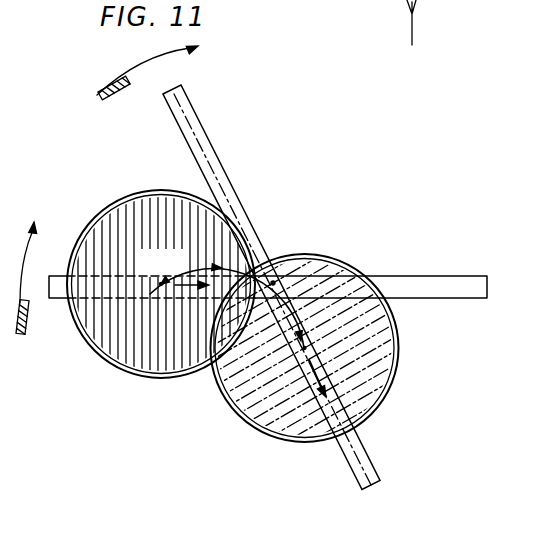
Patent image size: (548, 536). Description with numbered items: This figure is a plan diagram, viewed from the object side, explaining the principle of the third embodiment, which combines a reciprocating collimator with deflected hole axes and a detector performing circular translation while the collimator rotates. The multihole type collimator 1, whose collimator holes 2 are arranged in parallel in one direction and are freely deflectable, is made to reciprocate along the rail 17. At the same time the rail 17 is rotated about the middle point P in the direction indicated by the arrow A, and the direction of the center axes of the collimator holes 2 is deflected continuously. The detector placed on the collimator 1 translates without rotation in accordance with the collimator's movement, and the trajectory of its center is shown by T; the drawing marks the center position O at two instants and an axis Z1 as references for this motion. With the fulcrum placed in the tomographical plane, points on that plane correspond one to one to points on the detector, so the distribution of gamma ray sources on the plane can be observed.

The multihole type collimator 1 is at (133, 378).
The collimator holes 2 is at (113, 222).
The rail 17 is at (58, 299).
The disk center O(t1), O(t2) O is at (160, 283).
The trajectory of the center T is at (211, 268).
The middle point P is at (273, 282).
The arrow A is at (102, 190).
The axis Z1' Z1 is at (422, 48).